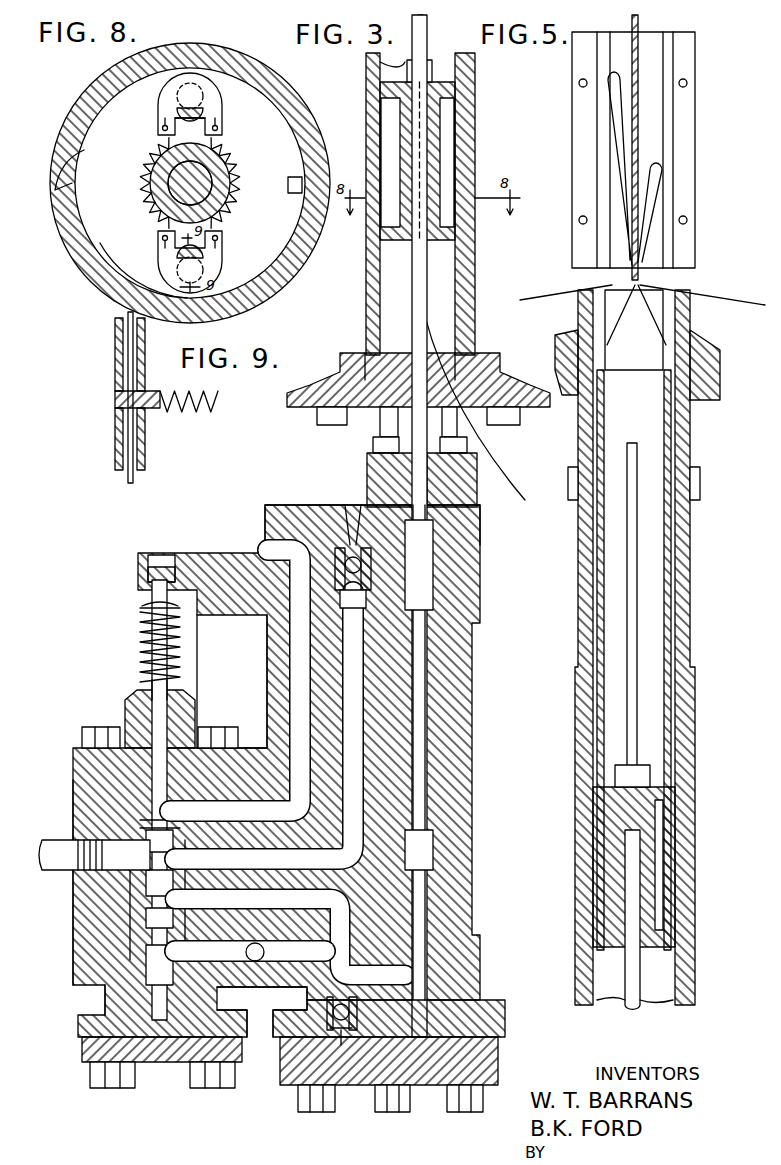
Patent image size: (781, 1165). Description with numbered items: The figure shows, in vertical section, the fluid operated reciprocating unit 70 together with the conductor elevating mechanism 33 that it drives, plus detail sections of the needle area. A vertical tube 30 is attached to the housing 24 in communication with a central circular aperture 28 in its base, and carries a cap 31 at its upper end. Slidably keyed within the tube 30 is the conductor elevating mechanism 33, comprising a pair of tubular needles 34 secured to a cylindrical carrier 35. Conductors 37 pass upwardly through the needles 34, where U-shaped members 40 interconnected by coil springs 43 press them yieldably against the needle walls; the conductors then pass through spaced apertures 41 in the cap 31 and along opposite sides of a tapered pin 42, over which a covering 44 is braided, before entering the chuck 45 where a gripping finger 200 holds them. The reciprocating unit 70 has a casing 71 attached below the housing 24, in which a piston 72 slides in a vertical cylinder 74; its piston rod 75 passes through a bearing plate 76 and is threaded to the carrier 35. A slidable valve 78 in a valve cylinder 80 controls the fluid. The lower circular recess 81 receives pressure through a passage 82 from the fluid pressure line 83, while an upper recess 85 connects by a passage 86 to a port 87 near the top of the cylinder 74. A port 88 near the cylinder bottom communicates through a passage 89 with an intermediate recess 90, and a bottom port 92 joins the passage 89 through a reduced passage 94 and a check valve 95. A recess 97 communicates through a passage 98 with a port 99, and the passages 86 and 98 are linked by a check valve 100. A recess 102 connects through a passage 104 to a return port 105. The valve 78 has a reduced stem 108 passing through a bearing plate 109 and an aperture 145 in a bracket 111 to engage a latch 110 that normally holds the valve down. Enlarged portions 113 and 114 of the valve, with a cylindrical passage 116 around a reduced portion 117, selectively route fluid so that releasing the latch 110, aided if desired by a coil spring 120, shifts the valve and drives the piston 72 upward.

In FIG. 3, the housing 24 is at (520, 378).
In FIG. 3, the central circular aperture 28 is at (345, 415).
In FIG. 8, the vertical tube 30 is at (112, 78).
In FIG. 3, the vertical tube 30 is at (476, 232).
In FIG. 5, the vertical tube 30 is at (695, 640).
In FIG. 5, the cap 31 is at (700, 310).
In FIG. 8, the conductor elevating mechanism 33 is at (60, 150).
In FIG. 3, the conductor elevating mechanism 33 is at (455, 95).
In FIG. 5, the conductor elevating mechanism 33 is at (676, 733).
In FIG. 8, the tubular needles 34 is at (200, 108).
In FIG. 9, the tubular needles 34 is at (148, 430).
In FIG. 3, the tubular needles 34 is at (440, 62).
In FIG. 5, the tubular needles 34 is at (665, 440).
In FIG. 8, the cylindrical base member or carrier 35 is at (100, 280).
In FIG. 3, the cylindrical base member or carrier 35 is at (438, 160).
In FIG. 5, the cylindrical base member or carrier 35 is at (660, 870).
In FIG. 8, the conductors 37 is at (205, 110).
In FIG. 9, the conductors 37 is at (120, 470).
In FIG. 3, the conductors 37 is at (490, 465).
In FIG. 5, the conductors 37 is at (634, 330).
In FIG. 8, the U-shaped members 40 is at (225, 131).
In FIG. 9, the U-shaped members 40 is at (118, 395).
In FIG. 5, the spaced apertures 41 is at (636, 315).
In FIG. 5, the tapered pin 42 is at (650, 270).
In FIG. 8, the coil springs 43 is at (142, 165).
In FIG. 9, the coil springs 43 is at (220, 400).
In FIG. 5, the covering 44 is at (625, 90).
In FIG. 5, the chuck 45 is at (704, 175).
In FIG. 3, the fluid operated reciprocating unit 70 is at (483, 752).
In FIG. 3, the casing 71 is at (470, 1012).
In FIG. 3, the fluid operated piston 72 is at (433, 860).
In FIG. 3, the vertical cylinder 74 is at (430, 690).
In FIG. 3, the piston rod 75 is at (428, 660).
In FIG. 5, the piston rod 75 is at (645, 965).
In FIG. 3, the bearing plate 76 is at (465, 490).
In FIG. 3, the slidable valve 78 is at (90, 748).
In FIG. 3, the valve cylinder 80 is at (145, 870).
In FIG. 3, the circular recess 81 is at (95, 1085).
In FIG. 3, the passage 82 is at (100, 975).
In FIG. 3, the fluid pressure line 83 is at (50, 838).
In FIG. 3, the enlarged circular recess 85 is at (128, 705).
In FIG. 3, the passage 86 is at (267, 645).
In FIG. 3, the port 87 is at (345, 500).
In FIG. 3, the port 88 is at (395, 975).
In FIG. 3, the passage 89 is at (390, 870).
In FIG. 3, the enlarged circular recess 90 is at (130, 905).
In FIG. 3, the port 92 is at (393, 1087).
In FIG. 3, the reduced passage 94 is at (360, 1000).
In FIG. 3, the check valve 95 is at (298, 1095).
In FIG. 3, the recess 97 is at (145, 835).
In FIG. 3, the passage 98 is at (420, 820).
In FIG. 3, the port 99 is at (433, 612).
In FIG. 3, the check valve 100 is at (265, 525).
In FIG. 3, the circular recess 102 is at (150, 978).
In FIG. 3, the passage 104 is at (260, 1010).
In FIG. 3, the return port 105 is at (250, 951).
In FIG. 3, the reduced stem 108 is at (138, 630).
In FIG. 3, the bearing plate 109 is at (150, 685).
In FIG. 3, the slidable stop plate or latch 110 is at (140, 562).
In FIG. 3, the bracket 111 is at (185, 560).
In FIG. 3, the enlarged portion 113 is at (173, 840).
In FIG. 3, the enlarged portion 114 is at (120, 1045).
In FIG. 3, the cylindrical passage 116 is at (173, 915).
In FIG. 3, the reduced portion 117 is at (173, 880).
In FIG. 3, the coil spring 120 is at (150, 600).
In FIG. 3, the aperture 145 is at (185, 620).
In FIG. 5, the conductor gripping finger 200 is at (660, 180).